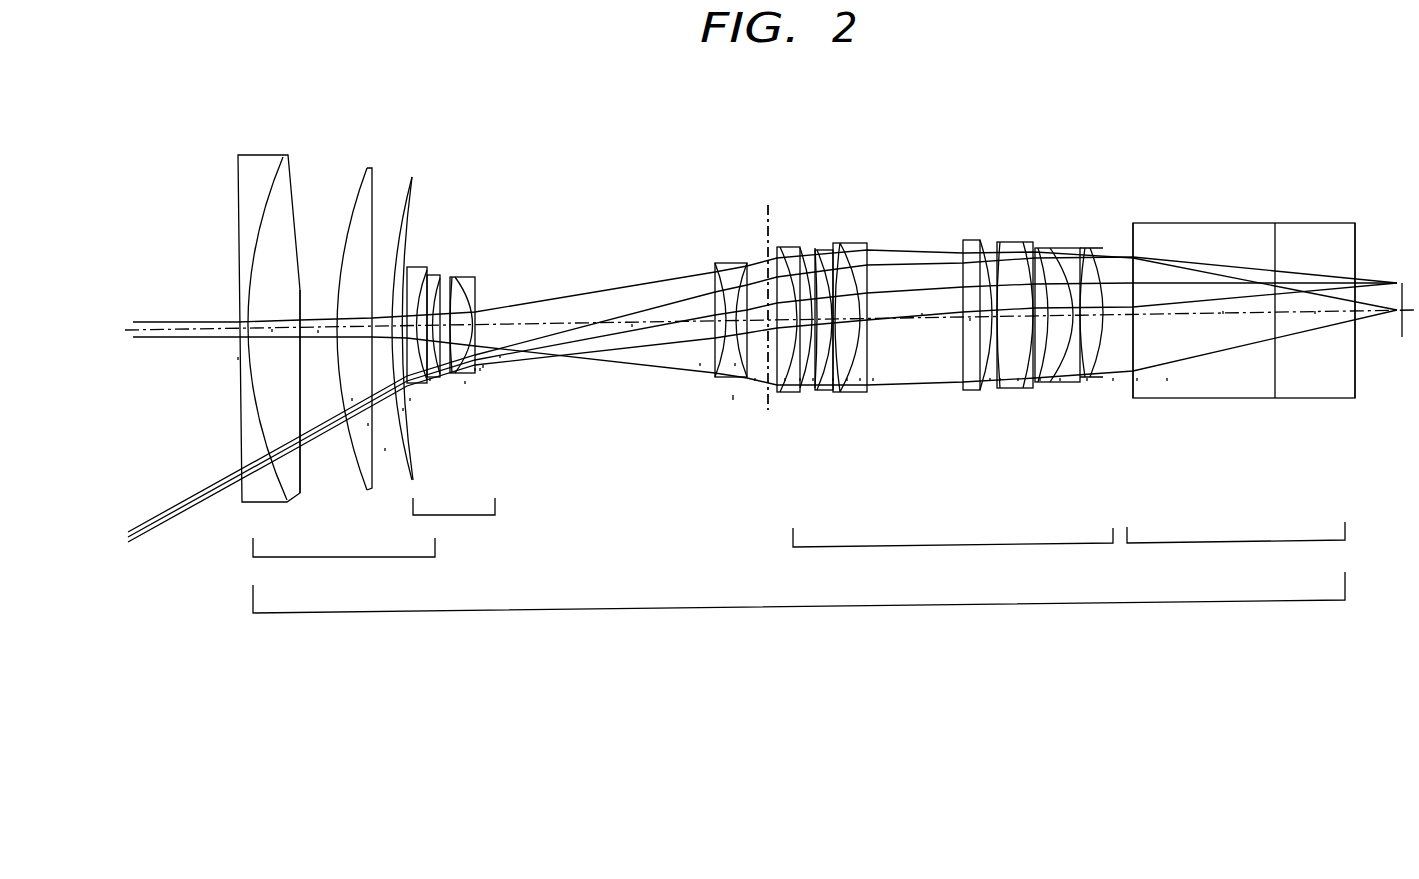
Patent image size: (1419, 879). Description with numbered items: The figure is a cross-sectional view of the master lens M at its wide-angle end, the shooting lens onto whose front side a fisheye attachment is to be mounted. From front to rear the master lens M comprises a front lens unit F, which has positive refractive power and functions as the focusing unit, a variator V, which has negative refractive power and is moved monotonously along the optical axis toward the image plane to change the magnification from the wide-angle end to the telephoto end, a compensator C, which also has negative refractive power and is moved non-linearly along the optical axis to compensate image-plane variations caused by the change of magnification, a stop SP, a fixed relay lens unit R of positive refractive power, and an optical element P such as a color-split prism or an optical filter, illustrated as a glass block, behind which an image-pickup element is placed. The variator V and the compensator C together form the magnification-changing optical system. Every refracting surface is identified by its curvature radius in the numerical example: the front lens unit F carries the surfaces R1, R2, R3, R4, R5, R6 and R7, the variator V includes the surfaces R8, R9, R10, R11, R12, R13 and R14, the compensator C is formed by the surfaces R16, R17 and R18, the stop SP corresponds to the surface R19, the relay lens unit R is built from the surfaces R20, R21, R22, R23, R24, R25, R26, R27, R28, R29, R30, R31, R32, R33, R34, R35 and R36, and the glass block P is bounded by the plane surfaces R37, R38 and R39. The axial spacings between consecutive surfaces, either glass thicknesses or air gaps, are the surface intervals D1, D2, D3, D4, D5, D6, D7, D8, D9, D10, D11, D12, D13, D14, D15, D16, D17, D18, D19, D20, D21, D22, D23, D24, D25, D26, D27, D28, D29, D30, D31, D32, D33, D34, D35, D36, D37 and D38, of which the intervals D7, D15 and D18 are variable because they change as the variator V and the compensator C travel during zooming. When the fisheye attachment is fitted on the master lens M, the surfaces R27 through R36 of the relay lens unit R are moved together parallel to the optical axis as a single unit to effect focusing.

The lens surface R1 is at (238, 205).
The lens surface R2 is at (268, 197).
The lens surface R3 is at (300, 197).
The lens surface R4 is at (353, 203).
The lens surface R5 is at (379, 172).
The lens surface R6 is at (402, 195).
The lens surface R7 is at (418, 200).
The lens surface R8 is at (410, 262).
The lens surface R9 is at (425, 268).
The lens surface R10 is at (437, 285).
The lens surface R11 is at (462, 288).
The lens surface R12 is at (470, 300).
The lens surface R13 is at (478, 266).
The lens surface R14 is at (478, 300).
The lens surface R16 is at (712, 292).
The lens surface R17 is at (735, 300).
The lens surface R18 is at (760, 270).
The stop surface R19 is at (768, 235).
The lens surface R20 is at (770, 245).
The lens surface R21 is at (792, 250).
The lens surface R22 is at (800, 250).
The lens surface R23 is at (817, 250).
The lens surface R24 is at (833, 250).
The lens surface R25 is at (867, 253).
The lens surface R26 is at (890, 258).
The lens surface R27 is at (943, 248).
The lens surface R28 is at (983, 247).
The lens surface R29 is at (983, 248).
The lens surface R30 is at (1003, 248).
The lens surface R31 is at (1037, 248).
The lens surface R32 is at (1040, 248).
The lens surface R33 is at (1065, 248).
The lens surface R34 is at (1083, 248).
The lens surface R35 is at (1100, 248).
The lens surface R36 is at (1135, 292).
The glass block surface R37 is at (1157, 290).
The glass block surface R38 is at (1275, 260).
The glass block surface R39 is at (1355, 262).
The surface interval D1 is at (238, 358).
The surface interval D2 is at (272, 330).
The surface interval D3 is at (318, 332).
The surface interval D4 is at (352, 400).
The surface interval D5 is at (368, 425).
The surface interval D6 is at (385, 450).
The surface interval D7 is at (403, 410).
The surface interval D8 is at (410, 400).
The surface interval D9 is at (430, 380).
The surface interval D10 is at (465, 383).
The surface interval D11 is at (475, 370).
The surface interval D12 is at (480, 370).
The surface interval D13 is at (483, 367).
The surface interval D14 is at (500, 357).
The surface interval D15 is at (632, 325).
The surface interval D16 is at (700, 365).
The surface interval D17 is at (735, 365).
The surface interval D18 is at (755, 380).
The surface interval D19 is at (785, 380).
The surface interval D20 is at (800, 380).
The surface interval D21 is at (813, 380).
The surface interval D22 is at (833, 380).
The surface interval D23 is at (847, 380).
The surface interval D24 is at (860, 380).
The surface interval D25 is at (873, 380).
The surface interval D26 is at (922, 315).
The surface interval D27 is at (970, 320).
The surface interval D28 is at (990, 380).
The surface interval D29 is at (1000, 380).
The surface interval D30 is at (1018, 380).
The surface interval D31 is at (1040, 380).
The surface interval D32 is at (1060, 380).
The surface interval D33 is at (1087, 380).
The surface interval D34 is at (1113, 380).
The surface interval D35 is at (1137, 380).
The surface interval D36 is at (1167, 380).
The surface interval D37 is at (1223, 313).
The surface interval D38 is at (1315, 313).
The stop SP is at (768, 190).
The compensator C is at (733, 418).
The front lens unit F is at (344, 562).
The variator V is at (454, 523).
The relay lens unit R is at (953, 553).
The color split prism or optical filter P is at (1236, 549).
The master lens M is at (799, 607).